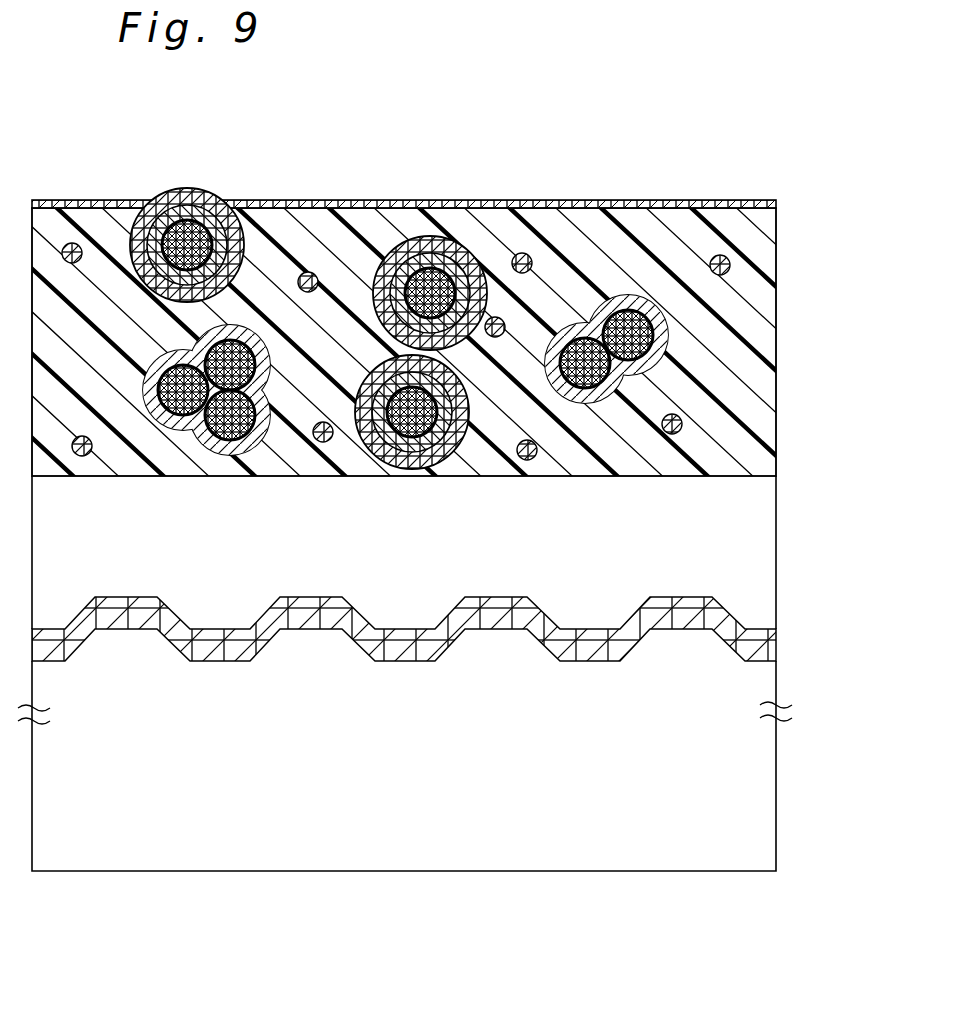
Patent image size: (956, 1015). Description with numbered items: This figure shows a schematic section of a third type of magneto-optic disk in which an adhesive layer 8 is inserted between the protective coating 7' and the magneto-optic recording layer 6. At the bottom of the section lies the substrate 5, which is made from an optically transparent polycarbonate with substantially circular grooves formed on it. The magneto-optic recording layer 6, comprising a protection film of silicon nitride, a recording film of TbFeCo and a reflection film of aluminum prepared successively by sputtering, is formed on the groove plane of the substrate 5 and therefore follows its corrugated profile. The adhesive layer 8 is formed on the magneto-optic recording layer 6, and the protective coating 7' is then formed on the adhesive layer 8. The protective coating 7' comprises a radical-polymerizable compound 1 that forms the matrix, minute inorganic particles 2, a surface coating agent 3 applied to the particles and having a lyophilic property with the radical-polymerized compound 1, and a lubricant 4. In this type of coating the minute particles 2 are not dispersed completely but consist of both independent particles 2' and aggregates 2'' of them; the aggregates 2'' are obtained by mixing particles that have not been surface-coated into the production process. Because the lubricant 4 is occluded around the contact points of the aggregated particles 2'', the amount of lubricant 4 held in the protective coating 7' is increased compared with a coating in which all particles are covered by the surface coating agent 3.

The radical-polymerizable compound 1 is at (750, 243).
The minute inorganic particles 2 is at (405, 286).
The independent particles 2' is at (282, 301).
The aggregates of minute particles 2'' is at (360, 296).
The surface coating agent 3 is at (195, 215).
The lubricant 4 is at (307, 272).
The substrate 5 is at (776, 805).
The magneto-optic recording layer 6 is at (778, 645).
The protective coating 7' is at (444, 507).
The adhesive layer 8 is at (776, 552).